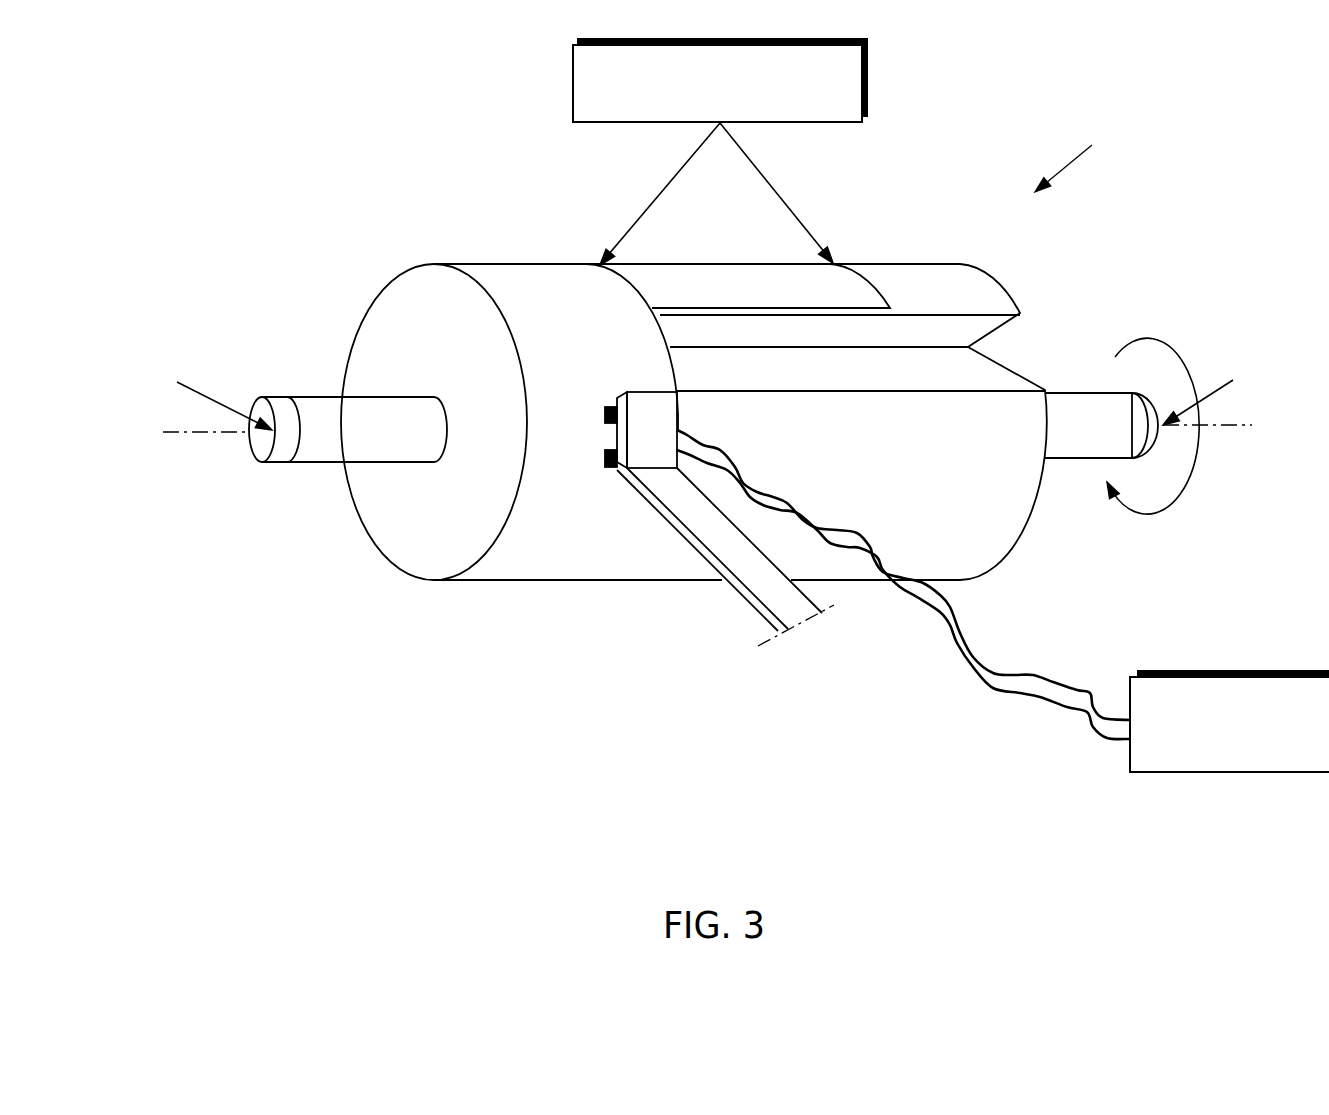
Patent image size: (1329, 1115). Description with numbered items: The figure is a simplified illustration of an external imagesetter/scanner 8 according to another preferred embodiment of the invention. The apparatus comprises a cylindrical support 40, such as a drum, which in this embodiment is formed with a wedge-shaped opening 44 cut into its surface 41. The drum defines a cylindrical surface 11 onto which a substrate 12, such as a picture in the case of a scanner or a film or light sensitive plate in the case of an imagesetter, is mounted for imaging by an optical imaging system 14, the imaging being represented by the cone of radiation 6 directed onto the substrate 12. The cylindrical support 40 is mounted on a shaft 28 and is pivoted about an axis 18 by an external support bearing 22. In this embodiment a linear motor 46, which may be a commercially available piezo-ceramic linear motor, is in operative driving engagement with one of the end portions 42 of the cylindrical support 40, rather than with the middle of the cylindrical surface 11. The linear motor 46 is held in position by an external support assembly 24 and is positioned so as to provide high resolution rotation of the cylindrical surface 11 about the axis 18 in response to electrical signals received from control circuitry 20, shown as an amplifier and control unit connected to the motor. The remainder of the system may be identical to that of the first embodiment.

The cone of radiation 6 is at (645, 212).
The external imagesetter/scanner 8 is at (1070, 152).
The cylindrical surface 11 is at (968, 290).
The substrate 12 is at (890, 262).
The optical imaging system 14 is at (870, 73).
The axis 18 is at (245, 432).
The control circuitry 20 is at (1257, 670).
The external support bearing 22 is at (703, 426).
The external support assembly 24 is at (735, 601).
The shaft 28 is at (317, 455).
The cylindrical support 40 is at (364, 589).
The surface 41 is at (993, 533).
The end portion 42 is at (540, 535).
The wedge-shaped opening 44 is at (977, 387).
The linear motor 46 is at (653, 425).